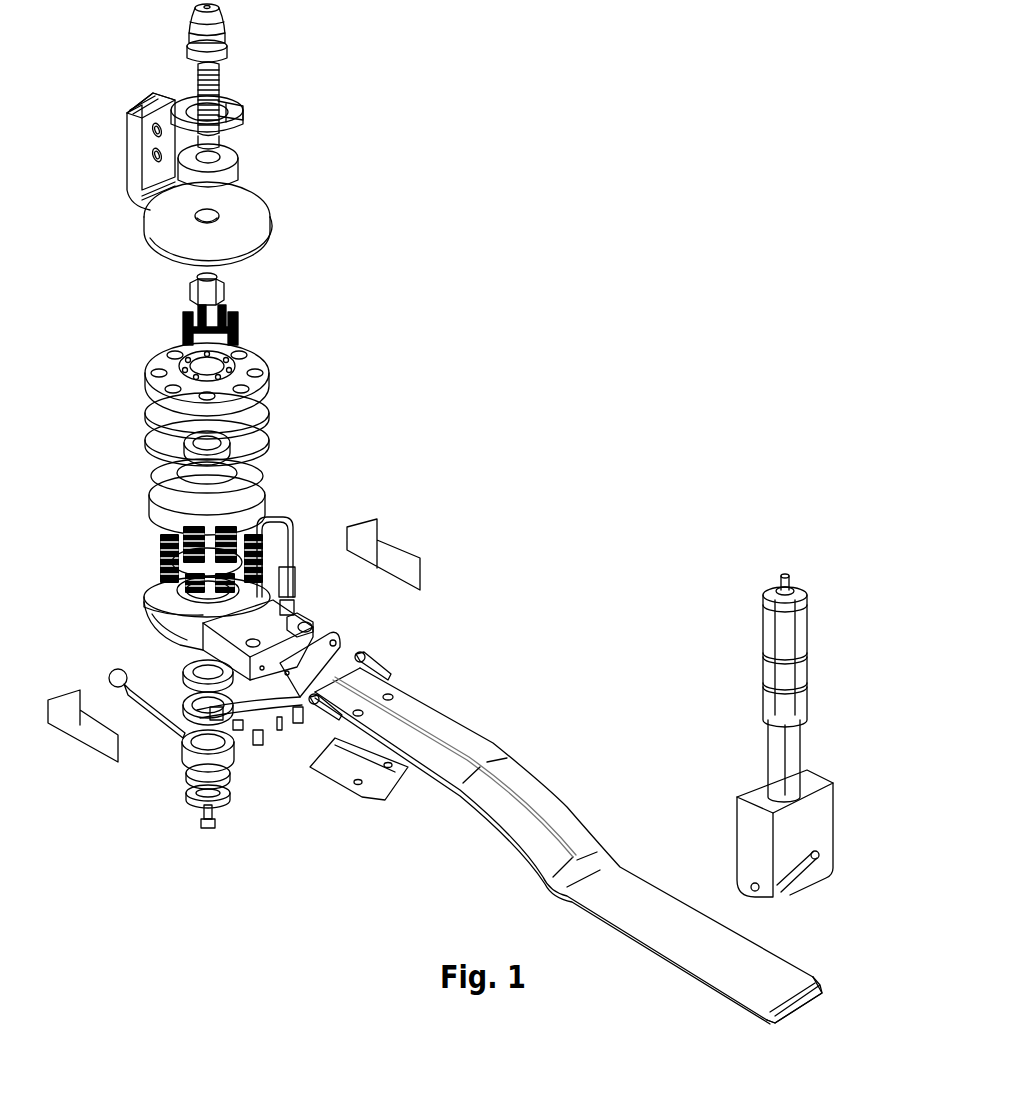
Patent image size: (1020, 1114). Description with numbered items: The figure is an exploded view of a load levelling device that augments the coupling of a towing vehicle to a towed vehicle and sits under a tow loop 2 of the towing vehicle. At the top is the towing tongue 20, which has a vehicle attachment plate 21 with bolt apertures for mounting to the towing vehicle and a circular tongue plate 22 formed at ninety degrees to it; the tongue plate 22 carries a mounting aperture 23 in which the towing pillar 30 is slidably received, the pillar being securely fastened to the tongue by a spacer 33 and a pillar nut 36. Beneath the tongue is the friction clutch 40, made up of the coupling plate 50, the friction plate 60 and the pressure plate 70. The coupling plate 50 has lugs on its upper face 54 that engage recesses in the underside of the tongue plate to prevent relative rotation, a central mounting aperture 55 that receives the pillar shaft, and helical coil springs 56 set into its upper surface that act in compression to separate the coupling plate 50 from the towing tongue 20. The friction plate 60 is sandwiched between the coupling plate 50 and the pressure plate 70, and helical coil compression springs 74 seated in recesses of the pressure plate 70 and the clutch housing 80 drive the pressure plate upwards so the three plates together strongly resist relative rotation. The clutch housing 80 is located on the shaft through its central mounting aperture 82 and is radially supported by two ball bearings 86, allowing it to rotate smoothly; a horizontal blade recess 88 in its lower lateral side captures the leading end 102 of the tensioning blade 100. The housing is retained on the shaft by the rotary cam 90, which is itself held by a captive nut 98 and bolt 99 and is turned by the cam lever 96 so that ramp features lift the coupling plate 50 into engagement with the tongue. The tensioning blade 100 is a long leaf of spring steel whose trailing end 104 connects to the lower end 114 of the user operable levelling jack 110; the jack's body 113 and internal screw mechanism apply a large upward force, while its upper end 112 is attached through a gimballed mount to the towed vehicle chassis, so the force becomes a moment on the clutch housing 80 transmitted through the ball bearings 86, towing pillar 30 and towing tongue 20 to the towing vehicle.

The tow loop 2 is at (243, 124).
The towing tongue 20 is at (132, 145).
The vehicle attachment plate 21 is at (152, 108).
The tongue plate 22 is at (158, 243).
The mounting aperture 23 is at (216, 214).
The towing pillar 30 is at (222, 30).
The spacer 33 is at (238, 170).
The pillar nut 36 is at (222, 281).
The friction clutch 40 is at (130, 365).
The coupling plate 50 is at (270, 398).
The upper face 54 is at (160, 362).
The central mounting aperture 55 is at (270, 375).
The helical coil springs 56 is at (236, 328).
The friction plate 60 is at (242, 483).
The pressure plate 70 is at (262, 503).
The helical coil compression springs 74 is at (153, 570).
The clutch housing 80 is at (143, 608).
The central mounting aperture 82 is at (148, 588).
The ball bearings 86 is at (270, 450).
The blade recess 88 is at (288, 660).
The rotary cam 90 is at (185, 758).
The cam lever 96 is at (110, 674).
The captive nut 98 is at (202, 800).
The bolt 99 is at (213, 830).
The tensioning blade 100 is at (493, 743).
The leading end 102 is at (410, 708).
The trailing end 104 is at (820, 986).
The levelling jack 110 is at (808, 660).
The upper end 112 is at (771, 582).
The body 113 is at (808, 705).
The lower end 114 is at (835, 812).